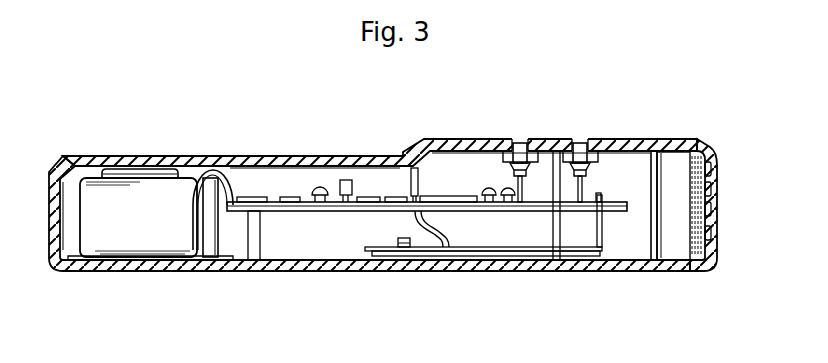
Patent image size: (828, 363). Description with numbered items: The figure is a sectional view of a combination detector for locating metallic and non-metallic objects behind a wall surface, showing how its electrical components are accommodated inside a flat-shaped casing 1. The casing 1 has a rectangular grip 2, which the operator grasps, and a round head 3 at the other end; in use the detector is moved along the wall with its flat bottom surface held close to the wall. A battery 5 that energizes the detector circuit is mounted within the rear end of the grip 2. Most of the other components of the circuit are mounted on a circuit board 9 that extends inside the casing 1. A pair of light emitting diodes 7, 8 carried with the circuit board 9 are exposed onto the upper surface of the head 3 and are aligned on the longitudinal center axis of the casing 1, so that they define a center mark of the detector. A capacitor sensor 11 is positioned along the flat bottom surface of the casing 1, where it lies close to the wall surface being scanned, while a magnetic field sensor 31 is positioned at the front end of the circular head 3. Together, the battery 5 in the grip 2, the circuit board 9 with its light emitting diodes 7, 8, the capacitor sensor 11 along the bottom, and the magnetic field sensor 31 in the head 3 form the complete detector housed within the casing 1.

The casing 1 is at (249, 155).
The grip 2 is at (108, 273).
The head 3 is at (699, 141).
The battery 5 is at (142, 237).
The light emitting diode 7 is at (520, 141).
The light emitting diode 8 is at (581, 141).
The circuit board 9 is at (349, 211).
The capacitor sensor 11 is at (500, 253).
The magnetic field sensor 31 is at (680, 217).